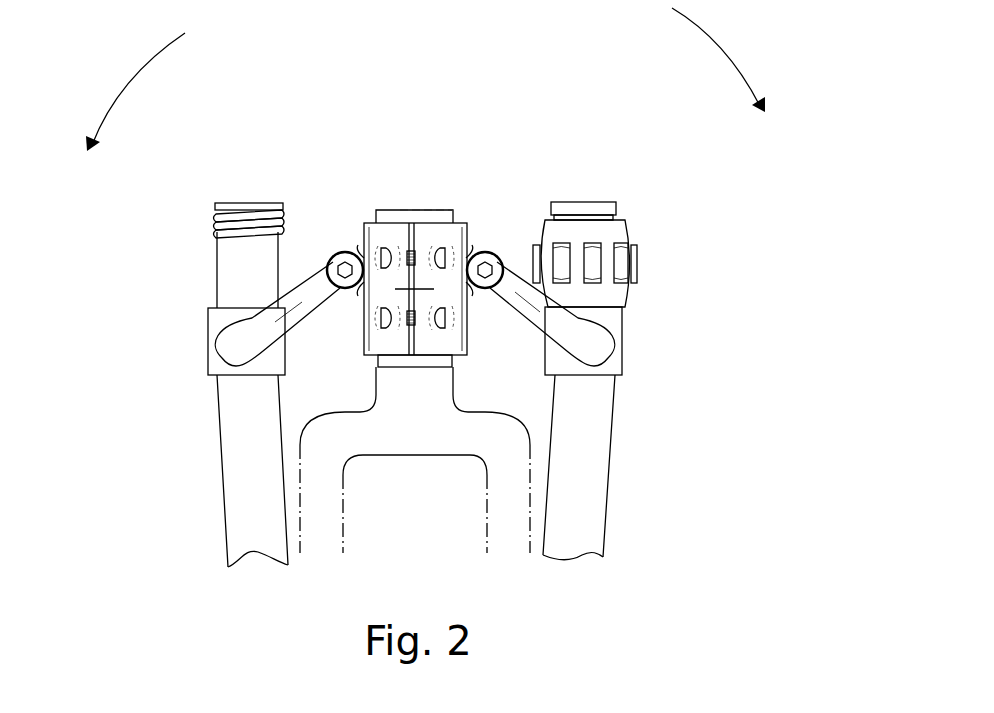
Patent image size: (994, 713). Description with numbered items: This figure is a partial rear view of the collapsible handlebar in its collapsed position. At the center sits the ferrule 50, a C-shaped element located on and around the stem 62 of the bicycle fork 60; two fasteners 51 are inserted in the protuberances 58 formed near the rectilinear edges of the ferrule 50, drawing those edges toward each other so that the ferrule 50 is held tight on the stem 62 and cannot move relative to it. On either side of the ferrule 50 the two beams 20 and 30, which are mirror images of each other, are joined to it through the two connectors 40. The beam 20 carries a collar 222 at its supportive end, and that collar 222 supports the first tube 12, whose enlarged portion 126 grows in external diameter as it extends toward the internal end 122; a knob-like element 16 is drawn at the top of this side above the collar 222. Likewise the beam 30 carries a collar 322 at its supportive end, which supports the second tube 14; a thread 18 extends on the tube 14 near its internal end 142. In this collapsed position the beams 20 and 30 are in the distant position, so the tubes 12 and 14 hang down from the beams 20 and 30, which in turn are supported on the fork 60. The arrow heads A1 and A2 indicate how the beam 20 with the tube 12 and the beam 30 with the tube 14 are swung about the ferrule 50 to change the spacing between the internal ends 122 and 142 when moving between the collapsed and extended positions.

The tube 12 is at (600, 510).
The tube 14 is at (240, 465).
The internal end 142 is at (236, 203).
The thread 18 is at (215, 212).
The collar 322 is at (215, 315).
The beam 30 is at (305, 310).
The connector 40 is at (336, 248).
The beam 20 is at (522, 275).
The fastener 51 is at (450, 248).
The ferrule 50 is at (462, 351).
The protuberance 58 is at (403, 240).
The stem 62 is at (438, 215).
The adjusting knob 16 is at (620, 295).
The internal end 122 is at (591, 202).
The enlarged portion 126 is at (612, 210).
The collar 222 is at (617, 368).
The fork 60 is at (414, 462).
The arrow head A1 is at (733, 63).
The arrow head A2 is at (130, 83).